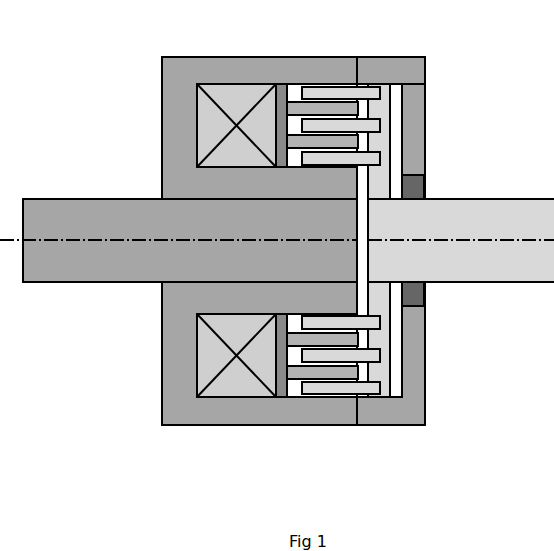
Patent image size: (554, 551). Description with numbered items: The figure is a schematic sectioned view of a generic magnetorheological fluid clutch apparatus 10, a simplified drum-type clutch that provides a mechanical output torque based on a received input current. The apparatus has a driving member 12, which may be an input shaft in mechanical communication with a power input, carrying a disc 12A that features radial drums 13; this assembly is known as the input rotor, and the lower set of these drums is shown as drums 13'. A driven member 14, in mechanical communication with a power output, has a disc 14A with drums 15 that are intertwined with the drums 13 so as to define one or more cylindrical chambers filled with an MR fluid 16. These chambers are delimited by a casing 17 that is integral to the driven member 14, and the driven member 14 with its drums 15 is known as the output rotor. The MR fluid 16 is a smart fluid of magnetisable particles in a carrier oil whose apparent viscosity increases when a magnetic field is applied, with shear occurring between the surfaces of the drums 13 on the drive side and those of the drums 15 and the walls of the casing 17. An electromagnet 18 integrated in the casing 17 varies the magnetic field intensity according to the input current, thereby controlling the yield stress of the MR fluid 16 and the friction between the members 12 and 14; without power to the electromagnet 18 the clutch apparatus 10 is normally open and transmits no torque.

The MR fluid clutch apparatus 10 is at (72, 90).
The driving member 12 is at (462, 176).
The disc 12A is at (388, 152).
The drums 13 is at (341, 92).
The rotor fins (lower) 13' is at (354, 401).
The driven member 14 is at (108, 170).
The disc 14A is at (288, 86).
The drums 15 is at (303, 110).
The MR fluid 16 is at (363, 138).
The casing 17 is at (407, 57).
The electromagnet 18 is at (230, 95).